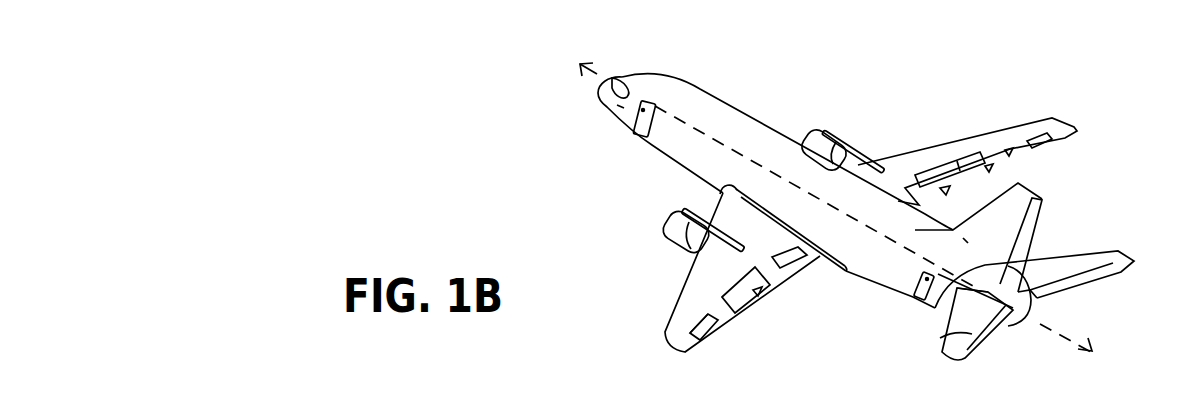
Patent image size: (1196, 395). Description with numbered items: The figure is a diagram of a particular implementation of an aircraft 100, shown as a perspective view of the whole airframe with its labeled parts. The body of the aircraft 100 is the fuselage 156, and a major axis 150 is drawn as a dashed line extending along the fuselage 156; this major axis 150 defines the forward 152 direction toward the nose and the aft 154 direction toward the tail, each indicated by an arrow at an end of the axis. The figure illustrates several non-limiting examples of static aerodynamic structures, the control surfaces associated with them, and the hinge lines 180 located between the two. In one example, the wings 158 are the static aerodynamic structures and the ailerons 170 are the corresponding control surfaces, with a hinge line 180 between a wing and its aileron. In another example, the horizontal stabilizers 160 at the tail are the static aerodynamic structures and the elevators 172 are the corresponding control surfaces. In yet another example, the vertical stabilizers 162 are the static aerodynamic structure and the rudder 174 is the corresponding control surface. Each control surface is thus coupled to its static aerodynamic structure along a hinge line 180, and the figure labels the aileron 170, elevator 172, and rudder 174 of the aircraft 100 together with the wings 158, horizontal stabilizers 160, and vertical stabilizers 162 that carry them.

The aircraft 100 is at (966, 89).
The major axis 150 is at (706, 138).
The forward direction 152 is at (570, 66).
The aft direction 154 is at (1162, 371).
The fuselage 156 is at (628, 130).
The wings 158 is at (690, 281).
The horizontal stabilizers 160 is at (1182, 233).
The vertical stabilizers 162 is at (1037, 196).
The ailerons 170 is at (700, 341).
The elevators 172 is at (985, 337).
The rudder 174 is at (1040, 292).
The hinge lines 180 is at (712, 313).